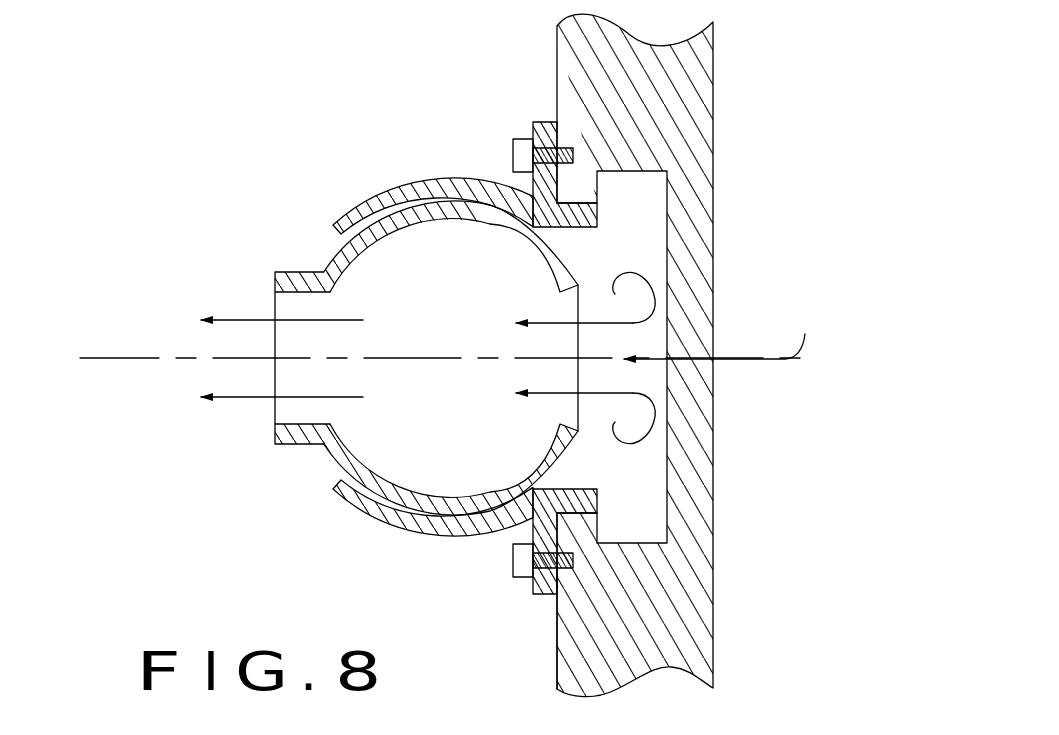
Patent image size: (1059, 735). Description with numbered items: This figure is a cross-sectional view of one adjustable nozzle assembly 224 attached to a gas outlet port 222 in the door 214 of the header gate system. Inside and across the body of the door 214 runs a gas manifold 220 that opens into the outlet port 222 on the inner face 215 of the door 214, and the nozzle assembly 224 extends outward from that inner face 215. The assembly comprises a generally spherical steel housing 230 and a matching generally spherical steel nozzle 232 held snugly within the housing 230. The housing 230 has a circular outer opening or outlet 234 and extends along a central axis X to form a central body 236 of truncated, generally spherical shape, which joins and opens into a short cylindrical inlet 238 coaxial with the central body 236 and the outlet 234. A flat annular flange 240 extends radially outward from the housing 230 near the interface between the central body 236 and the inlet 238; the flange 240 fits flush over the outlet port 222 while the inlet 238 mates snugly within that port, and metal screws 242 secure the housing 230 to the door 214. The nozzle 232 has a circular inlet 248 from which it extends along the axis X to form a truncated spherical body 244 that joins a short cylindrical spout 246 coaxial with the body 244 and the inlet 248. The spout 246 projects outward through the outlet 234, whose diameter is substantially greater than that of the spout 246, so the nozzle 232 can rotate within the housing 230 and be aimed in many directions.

The door 214 is at (713, 86).
The inner face 215 is at (557, 640).
The gas manifold 220 is at (640, 188).
The gas outlet port 222 is at (727, 332).
The adjustable nozzle assembly 224 is at (366, 136).
The housing 230 is at (381, 530).
The nozzle 232 is at (325, 473).
The outlet 234 is at (304, 245).
The central body 236 is at (382, 200).
The inlet 238 is at (600, 215).
The annular flange 240 is at (544, 121).
The metal screws 242 is at (514, 147).
The body 244 is at (443, 221).
The spout 246 is at (291, 446).
The inlet 248 is at (553, 413).
The central axis X is at (130, 347).